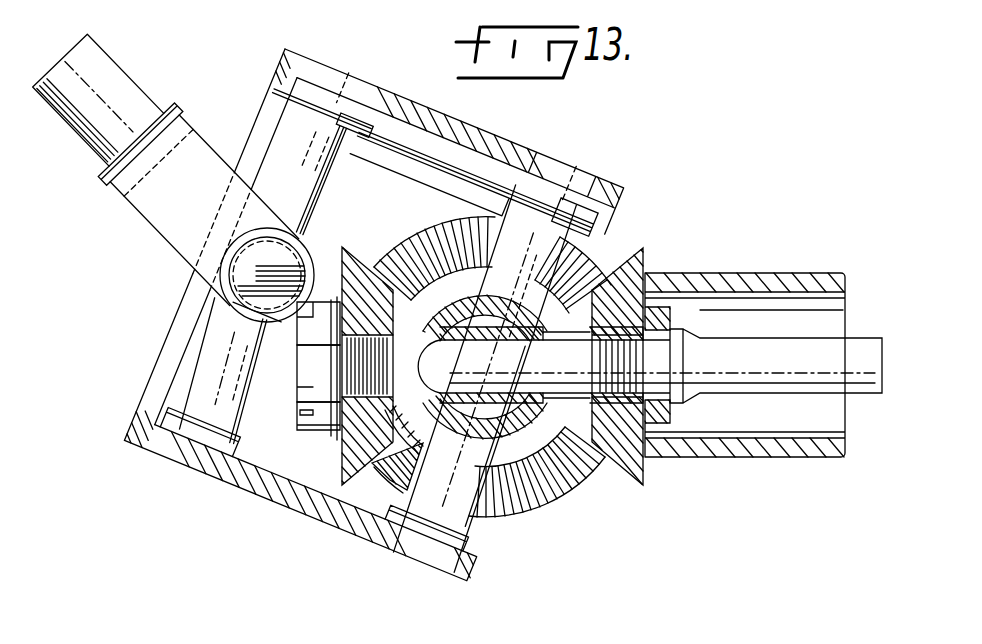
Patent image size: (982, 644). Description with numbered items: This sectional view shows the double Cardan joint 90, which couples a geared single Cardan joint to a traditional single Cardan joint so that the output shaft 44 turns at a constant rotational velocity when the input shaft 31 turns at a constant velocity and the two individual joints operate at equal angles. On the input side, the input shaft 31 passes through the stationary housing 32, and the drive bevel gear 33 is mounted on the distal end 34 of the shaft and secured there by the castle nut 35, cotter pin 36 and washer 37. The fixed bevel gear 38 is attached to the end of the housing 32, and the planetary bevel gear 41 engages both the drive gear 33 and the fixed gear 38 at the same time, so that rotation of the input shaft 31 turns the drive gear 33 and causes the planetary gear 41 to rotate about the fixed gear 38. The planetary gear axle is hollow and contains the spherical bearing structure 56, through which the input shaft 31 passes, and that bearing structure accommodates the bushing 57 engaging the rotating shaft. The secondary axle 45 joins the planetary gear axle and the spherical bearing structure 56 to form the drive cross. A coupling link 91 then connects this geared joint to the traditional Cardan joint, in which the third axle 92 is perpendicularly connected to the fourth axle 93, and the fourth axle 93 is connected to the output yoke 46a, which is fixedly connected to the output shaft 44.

The input shaft 31 is at (858, 343).
The stationary housing 32 is at (763, 273).
The drive bevel gear 33 is at (363, 260).
The distal end 34 is at (299, 375).
The castle nut 35 is at (308, 424).
The cotter pin 36 is at (301, 392).
The washer 37 is at (333, 437).
The fixed bevel gear 38 is at (630, 249).
The planetary bevel gear 41 is at (550, 510).
The output shaft 44 is at (125, 67).
The secondary axle 45 is at (500, 203).
The output yoke 46a is at (160, 241).
The spherical bearing structure 56 is at (497, 284).
The bushing 57 is at (456, 311).
The double Cardan joint 90 is at (651, 168).
The coupling link 91 is at (335, 532).
The third axle 92 is at (327, 168).
The fourth axle 93 is at (222, 292).